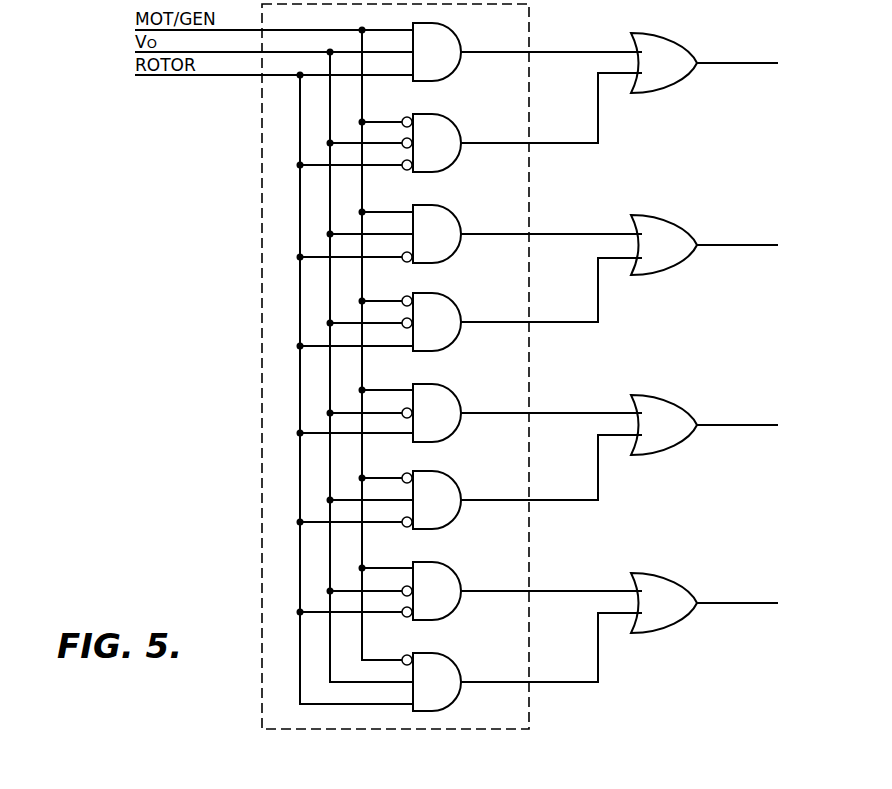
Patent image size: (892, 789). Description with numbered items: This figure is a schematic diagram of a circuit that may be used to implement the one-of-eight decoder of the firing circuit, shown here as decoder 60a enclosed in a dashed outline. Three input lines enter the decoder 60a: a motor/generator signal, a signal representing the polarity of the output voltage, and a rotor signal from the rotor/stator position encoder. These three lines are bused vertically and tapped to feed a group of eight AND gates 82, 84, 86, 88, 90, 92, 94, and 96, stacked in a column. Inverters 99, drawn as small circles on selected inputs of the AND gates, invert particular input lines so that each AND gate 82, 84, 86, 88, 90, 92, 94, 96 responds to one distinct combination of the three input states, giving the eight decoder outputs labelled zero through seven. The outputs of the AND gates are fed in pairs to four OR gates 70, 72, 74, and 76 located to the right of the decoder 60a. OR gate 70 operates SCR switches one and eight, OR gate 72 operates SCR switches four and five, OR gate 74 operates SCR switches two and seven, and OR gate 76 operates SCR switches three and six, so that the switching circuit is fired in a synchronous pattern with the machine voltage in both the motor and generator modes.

The decoder 60a is at (261, 200).
The OR gate 70 is at (689, 41).
The OR gate 72 is at (690, 222).
The OR gate 74 is at (687, 397).
The OR gate 76 is at (690, 583).
The AND gate 82 is at (457, 41).
The AND gate 84 is at (448, 124).
The AND gate 86 is at (454, 210).
The AND gate 88 is at (456, 307).
The AND gate 90 is at (453, 385).
The AND gate 92 is at (456, 475).
The AND gate 94 is at (454, 563).
The AND gate 96 is at (454, 658).
The inverters 99 is at (402, 165).